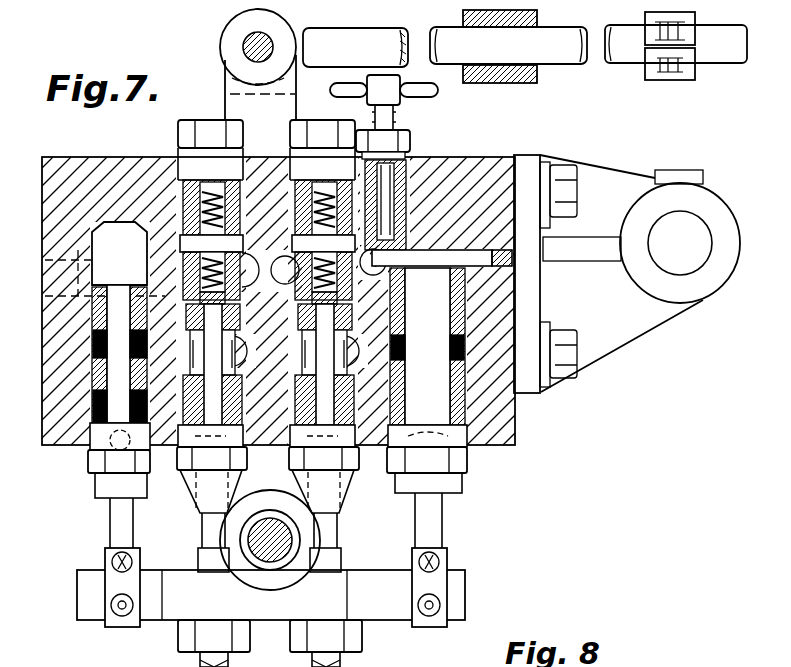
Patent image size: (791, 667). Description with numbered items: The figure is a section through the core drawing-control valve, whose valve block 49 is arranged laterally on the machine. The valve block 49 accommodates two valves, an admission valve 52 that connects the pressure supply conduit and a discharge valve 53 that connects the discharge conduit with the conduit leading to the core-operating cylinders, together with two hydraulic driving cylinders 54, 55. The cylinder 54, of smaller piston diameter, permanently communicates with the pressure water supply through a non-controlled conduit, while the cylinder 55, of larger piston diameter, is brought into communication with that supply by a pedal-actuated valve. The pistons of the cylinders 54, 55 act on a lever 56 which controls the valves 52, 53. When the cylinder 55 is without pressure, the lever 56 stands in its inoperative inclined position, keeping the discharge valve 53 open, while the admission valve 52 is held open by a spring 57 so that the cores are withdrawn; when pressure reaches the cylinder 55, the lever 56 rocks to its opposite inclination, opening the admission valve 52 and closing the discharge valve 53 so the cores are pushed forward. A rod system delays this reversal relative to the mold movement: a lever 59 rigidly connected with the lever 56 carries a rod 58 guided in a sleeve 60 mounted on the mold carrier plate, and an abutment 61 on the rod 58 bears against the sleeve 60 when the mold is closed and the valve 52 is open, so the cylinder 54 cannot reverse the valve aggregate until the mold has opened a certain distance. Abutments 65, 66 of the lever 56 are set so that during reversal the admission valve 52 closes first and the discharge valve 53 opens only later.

The valve block 49 is at (125, 158).
The admission valve 52 is at (192, 295).
The discharge valve 53 is at (354, 300).
The hydraulic driving cylinder 54 is at (98, 248).
The hydraulic driving cylinder 55 is at (428, 272).
The lever 56 is at (278, 612).
The spring 57 is at (218, 188).
The rod 58 is at (378, 32).
The lever 59 is at (233, 87).
The sleeve 60 is at (500, 80).
The abutment 61 is at (656, 76).
The abutment 65 is at (205, 554).
The abutment 66 is at (340, 553).